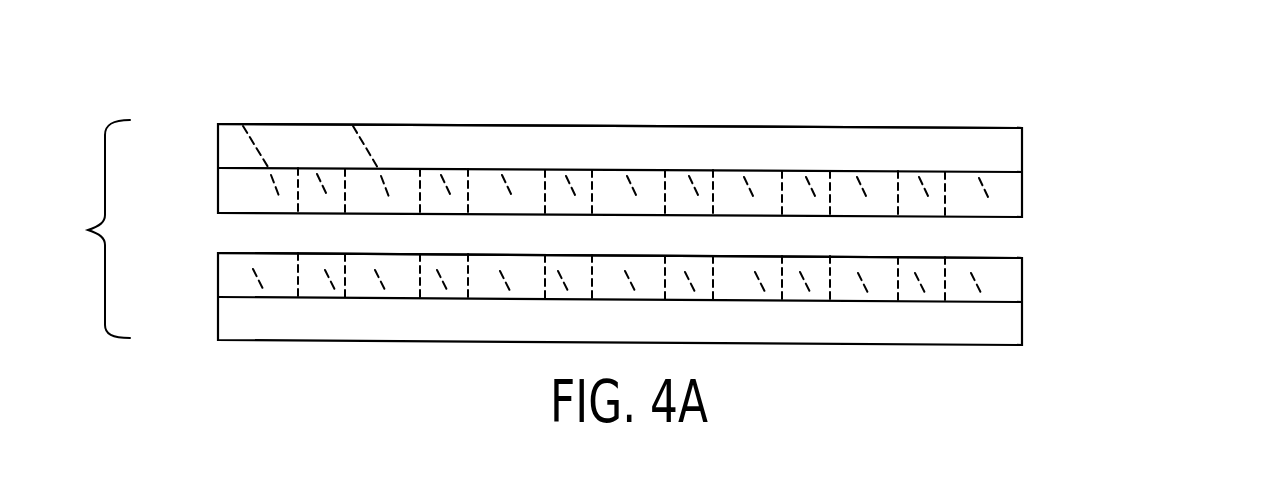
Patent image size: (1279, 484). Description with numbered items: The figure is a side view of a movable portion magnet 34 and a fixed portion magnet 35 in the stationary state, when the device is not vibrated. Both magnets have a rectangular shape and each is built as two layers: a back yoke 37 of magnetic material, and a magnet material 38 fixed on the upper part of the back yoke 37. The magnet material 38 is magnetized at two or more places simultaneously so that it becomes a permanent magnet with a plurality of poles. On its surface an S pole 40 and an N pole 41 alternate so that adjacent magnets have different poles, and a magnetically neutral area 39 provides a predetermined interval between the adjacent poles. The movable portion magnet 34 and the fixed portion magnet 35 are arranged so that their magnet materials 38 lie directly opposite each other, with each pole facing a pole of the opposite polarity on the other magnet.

The movable portion magnet 34 is at (724, 182).
The fixed portion magnet 35 is at (724, 299).
The back yoke 37 is at (582, 204).
The magnet material 38 is at (582, 223).
The magnetically neutral area 39 is at (620, 237).
The S pole 40 is at (624, 198).
The N pole 41 is at (598, 198).